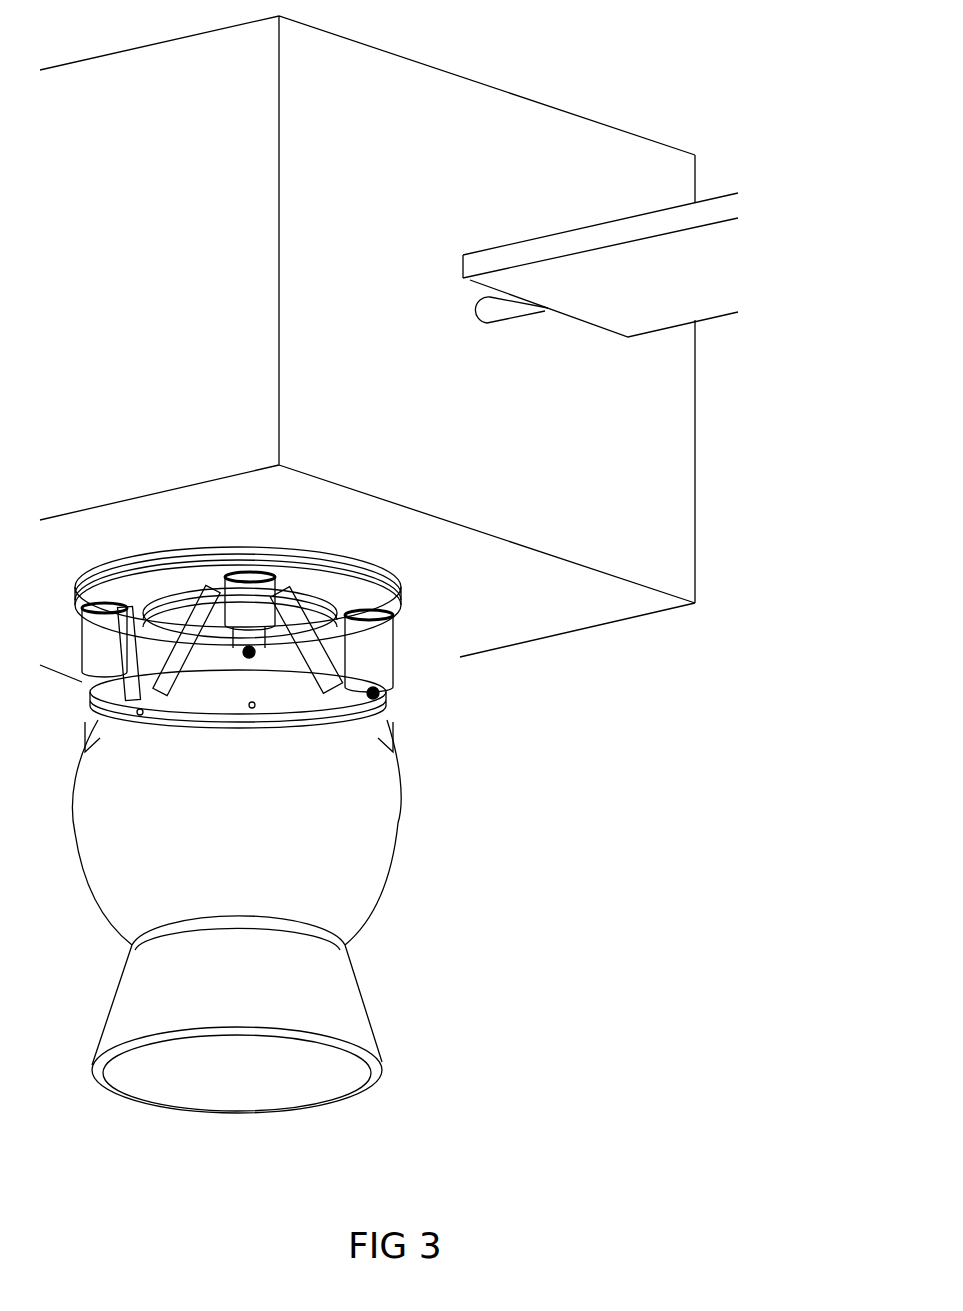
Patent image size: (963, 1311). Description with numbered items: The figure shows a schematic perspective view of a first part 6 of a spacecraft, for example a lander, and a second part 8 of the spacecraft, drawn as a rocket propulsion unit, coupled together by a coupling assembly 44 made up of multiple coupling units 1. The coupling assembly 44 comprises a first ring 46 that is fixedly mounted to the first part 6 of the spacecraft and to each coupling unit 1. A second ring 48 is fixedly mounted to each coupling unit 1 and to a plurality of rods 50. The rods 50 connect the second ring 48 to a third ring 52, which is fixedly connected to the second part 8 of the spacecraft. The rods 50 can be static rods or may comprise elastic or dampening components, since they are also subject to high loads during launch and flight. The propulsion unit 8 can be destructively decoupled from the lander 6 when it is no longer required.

The first part of the spacecraft 6 is at (695, 553).
The first ring 46 is at (398, 586).
The second ring 48 is at (398, 597).
The coupling unit 1 is at (200, 684).
The rods 50 is at (355, 683).
The coupling assembly 44 is at (440, 700).
The third ring 52 is at (395, 735).
The second part of the spacecraft 8 is at (400, 825).